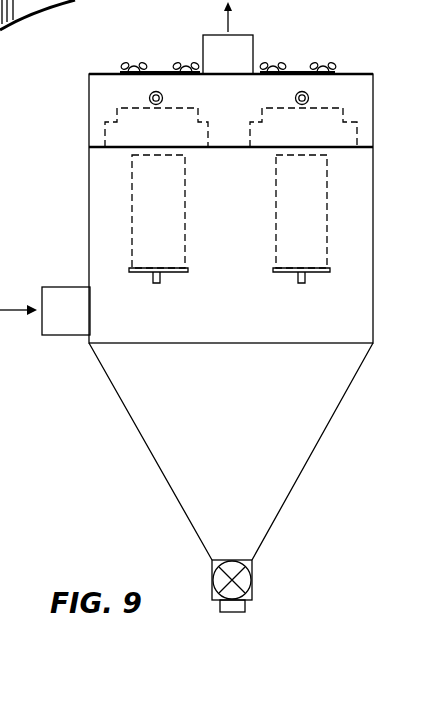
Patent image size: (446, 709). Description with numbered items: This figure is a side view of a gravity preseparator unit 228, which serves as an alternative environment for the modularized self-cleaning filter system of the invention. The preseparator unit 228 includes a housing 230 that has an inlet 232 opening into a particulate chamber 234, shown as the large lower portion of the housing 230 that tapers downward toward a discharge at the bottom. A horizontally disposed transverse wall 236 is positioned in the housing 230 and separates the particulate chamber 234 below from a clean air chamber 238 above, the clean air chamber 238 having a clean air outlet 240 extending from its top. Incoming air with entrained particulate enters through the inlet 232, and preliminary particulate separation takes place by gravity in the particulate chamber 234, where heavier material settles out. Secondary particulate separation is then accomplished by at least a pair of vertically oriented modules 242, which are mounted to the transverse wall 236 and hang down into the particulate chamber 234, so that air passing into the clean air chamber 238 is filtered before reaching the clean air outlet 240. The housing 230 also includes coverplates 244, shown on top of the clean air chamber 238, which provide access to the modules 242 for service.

The gravity preseparator unit 228 is at (82, 263).
The housing 230 is at (373, 328).
The inlet 232 is at (65, 337).
The particulate chamber 234 is at (245, 450).
The transverse wall 236 is at (97, 148).
The clean air chamber 238 is at (352, 97).
The clean air outlet 240 is at (253, 43).
The vertically oriented modules 242 is at (270, 216).
The coverplates 244 is at (303, 65).